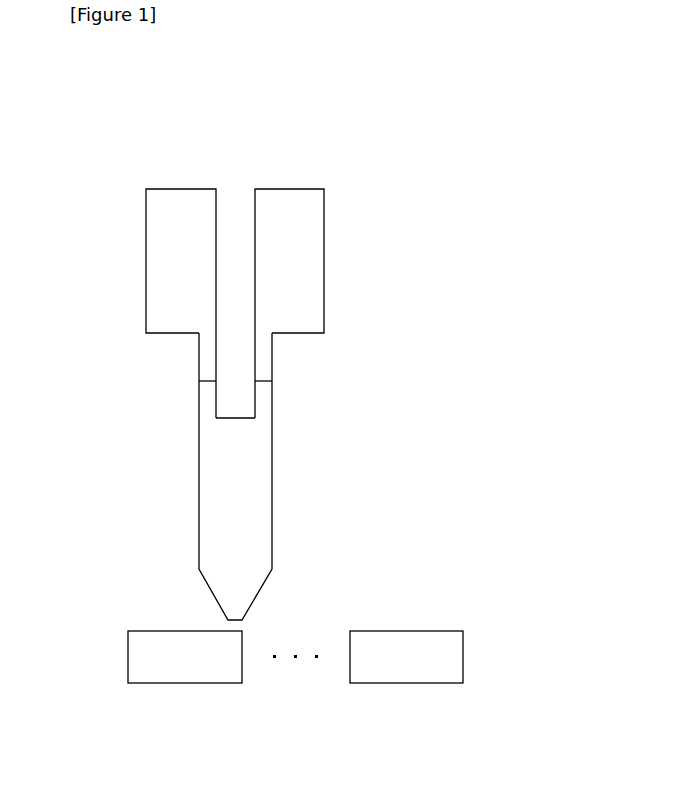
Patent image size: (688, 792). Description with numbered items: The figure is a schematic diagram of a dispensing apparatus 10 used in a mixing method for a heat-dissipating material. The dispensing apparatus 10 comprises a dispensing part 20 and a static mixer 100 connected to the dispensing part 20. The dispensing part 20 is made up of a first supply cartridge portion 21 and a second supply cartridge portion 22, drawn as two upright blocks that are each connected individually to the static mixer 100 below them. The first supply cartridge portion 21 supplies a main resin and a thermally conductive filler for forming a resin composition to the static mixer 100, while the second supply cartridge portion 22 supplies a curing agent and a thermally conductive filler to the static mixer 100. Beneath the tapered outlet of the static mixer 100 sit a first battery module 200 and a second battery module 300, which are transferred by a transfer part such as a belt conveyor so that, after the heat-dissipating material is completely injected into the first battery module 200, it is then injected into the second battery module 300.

The dispensing apparatus 10 is at (447, 86).
The dispensing part 20 is at (166, 176).
The first supply cartridge portion 21 is at (146, 207).
The second supply cartridge portion 22 is at (324, 208).
The static mixer 100 is at (292, 443).
The first battery module 200 is at (182, 683).
The second battery module 300 is at (406, 683).